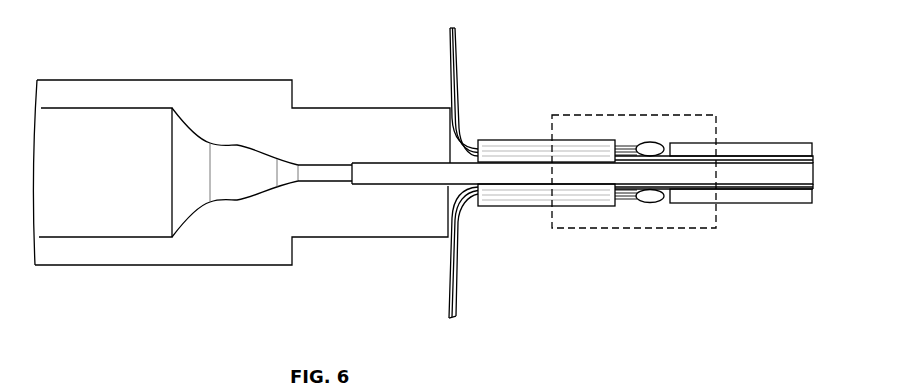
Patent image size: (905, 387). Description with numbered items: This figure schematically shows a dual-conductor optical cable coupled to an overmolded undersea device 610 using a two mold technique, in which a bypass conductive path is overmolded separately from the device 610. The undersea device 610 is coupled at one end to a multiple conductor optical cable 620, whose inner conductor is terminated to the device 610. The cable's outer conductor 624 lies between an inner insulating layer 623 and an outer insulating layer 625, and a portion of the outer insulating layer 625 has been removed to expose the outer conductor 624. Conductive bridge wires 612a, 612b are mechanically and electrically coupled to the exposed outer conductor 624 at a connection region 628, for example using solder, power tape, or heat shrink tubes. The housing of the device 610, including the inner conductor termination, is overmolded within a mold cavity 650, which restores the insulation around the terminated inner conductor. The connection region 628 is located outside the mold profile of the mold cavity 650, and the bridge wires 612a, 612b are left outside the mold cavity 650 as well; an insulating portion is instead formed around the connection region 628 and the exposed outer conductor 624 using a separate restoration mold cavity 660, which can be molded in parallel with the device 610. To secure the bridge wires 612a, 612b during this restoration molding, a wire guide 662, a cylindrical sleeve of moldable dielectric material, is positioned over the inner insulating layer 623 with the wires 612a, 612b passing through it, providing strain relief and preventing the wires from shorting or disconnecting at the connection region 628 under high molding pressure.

The mold cavity 650 is at (137, 78).
The undersea device 610 is at (168, 172).
The inner insulating layer 623 is at (384, 162).
The multiple conductor optical cable 620 is at (806, 128).
The conductive bridge wire 612a is at (450, 36).
The conductive bridge wire 612b is at (450, 289).
The wire guide 662 is at (504, 138).
The restoration mold cavity 660 is at (590, 113).
The connection region 628 is at (657, 136).
The outer conductor 624 is at (742, 156).
The outer insulating layer 625 is at (741, 203).